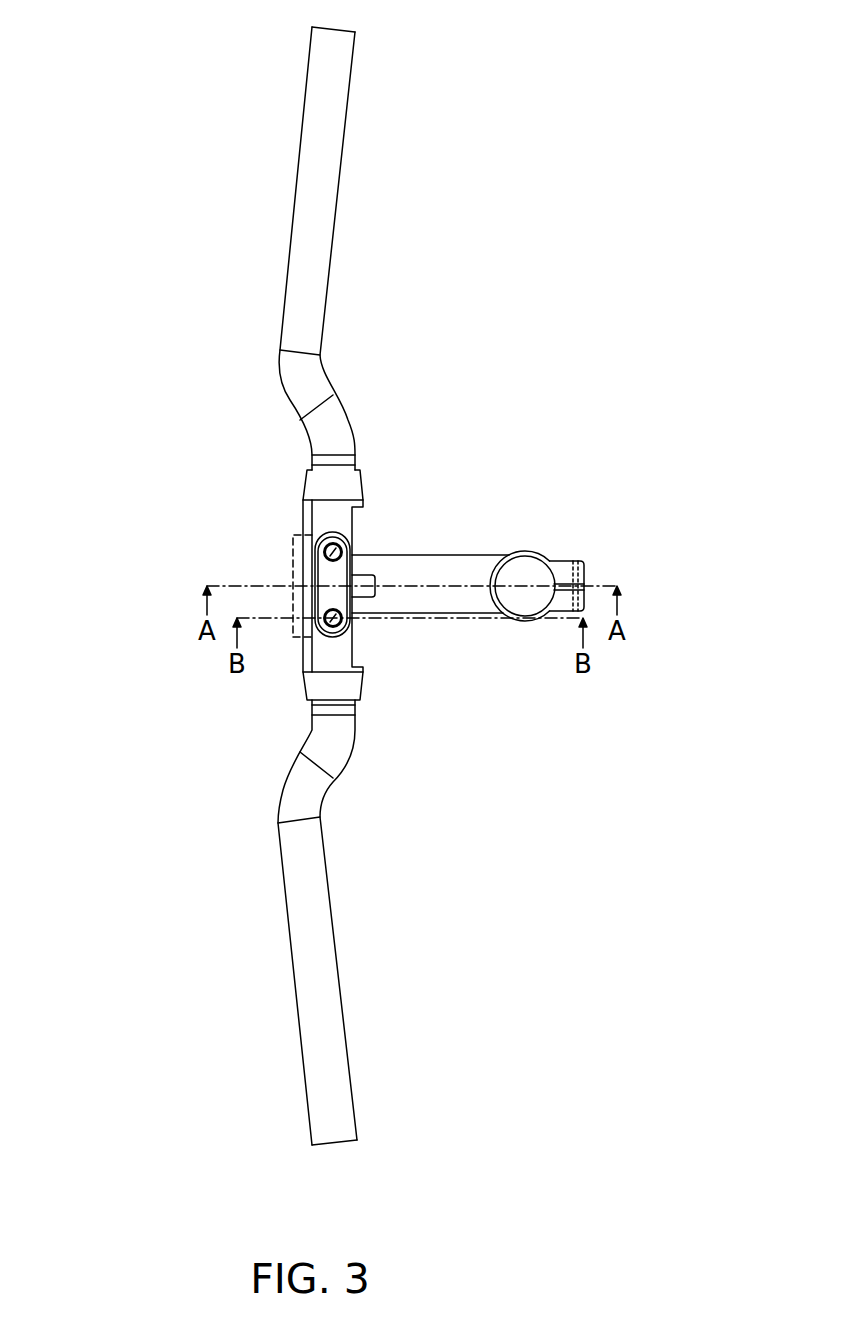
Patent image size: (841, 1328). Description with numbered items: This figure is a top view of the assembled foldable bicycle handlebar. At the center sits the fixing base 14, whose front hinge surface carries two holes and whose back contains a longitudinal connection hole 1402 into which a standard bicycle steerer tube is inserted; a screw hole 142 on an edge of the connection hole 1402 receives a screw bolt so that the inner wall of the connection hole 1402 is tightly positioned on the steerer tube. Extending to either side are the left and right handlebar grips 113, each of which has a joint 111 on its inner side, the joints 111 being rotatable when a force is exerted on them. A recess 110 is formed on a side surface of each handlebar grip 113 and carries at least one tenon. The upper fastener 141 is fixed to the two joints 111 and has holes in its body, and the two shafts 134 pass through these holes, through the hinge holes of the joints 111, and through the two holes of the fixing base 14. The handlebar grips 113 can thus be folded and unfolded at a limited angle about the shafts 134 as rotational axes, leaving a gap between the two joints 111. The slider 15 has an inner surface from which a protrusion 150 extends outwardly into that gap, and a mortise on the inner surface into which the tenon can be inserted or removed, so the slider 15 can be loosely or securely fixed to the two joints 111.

The handlebar grip 113 is at (317, 110).
The joint 111 is at (328, 520).
The recess 110 is at (303, 586).
The slider 15 is at (303, 553).
The upper fastener 141 is at (345, 620).
The shaft 134 is at (336, 550).
The protrusion 150 is at (363, 582).
The fixing base 14 is at (452, 605).
The connection hole 1402 is at (528, 572).
The screw hole 142 is at (584, 560).